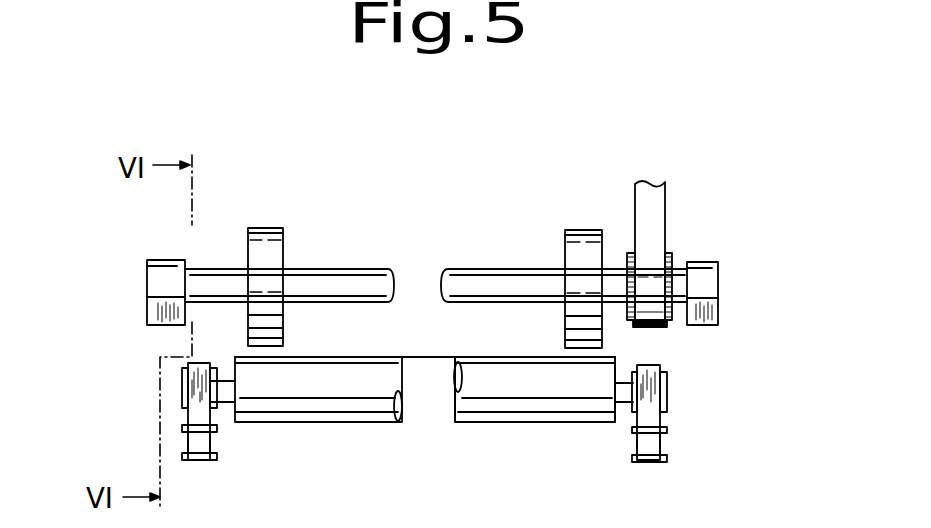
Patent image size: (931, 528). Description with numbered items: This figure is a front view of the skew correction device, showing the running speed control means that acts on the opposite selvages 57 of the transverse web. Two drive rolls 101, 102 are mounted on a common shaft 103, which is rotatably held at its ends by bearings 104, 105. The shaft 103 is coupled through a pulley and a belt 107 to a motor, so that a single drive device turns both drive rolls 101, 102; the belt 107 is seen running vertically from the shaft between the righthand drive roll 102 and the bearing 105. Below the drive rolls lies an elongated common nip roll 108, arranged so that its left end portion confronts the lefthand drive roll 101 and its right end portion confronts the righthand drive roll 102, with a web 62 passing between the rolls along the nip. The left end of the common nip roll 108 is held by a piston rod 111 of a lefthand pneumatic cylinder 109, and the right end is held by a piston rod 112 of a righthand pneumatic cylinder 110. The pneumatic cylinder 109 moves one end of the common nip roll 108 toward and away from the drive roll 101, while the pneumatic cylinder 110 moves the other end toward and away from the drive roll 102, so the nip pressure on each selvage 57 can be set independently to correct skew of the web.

The selvages 57 is at (250, 355).
The sheet 62 is at (417, 356).
The drive roll 101 is at (265, 228).
The drive roll 102 is at (583, 230).
The common shaft 103 is at (357, 270).
The bearing 104 is at (147, 292).
The bearing 105 is at (720, 282).
The belt 107 is at (658, 220).
The common nip roll 108 is at (513, 427).
The pneumatic cylinder 109 is at (217, 442).
The pneumatic cylinder 110 is at (662, 445).
The piston rod 111 is at (185, 420).
The piston rod 112 is at (660, 420).